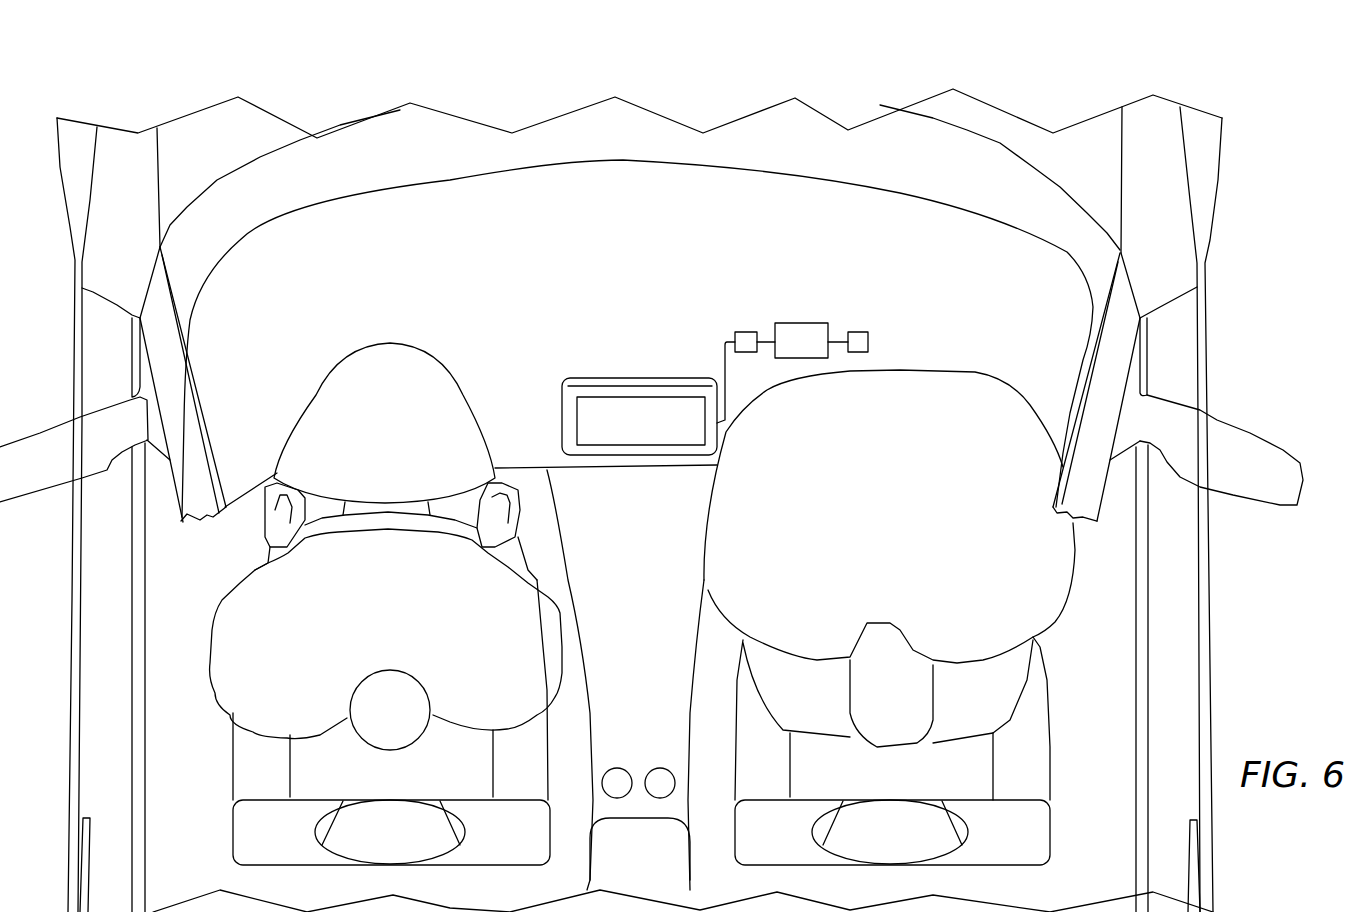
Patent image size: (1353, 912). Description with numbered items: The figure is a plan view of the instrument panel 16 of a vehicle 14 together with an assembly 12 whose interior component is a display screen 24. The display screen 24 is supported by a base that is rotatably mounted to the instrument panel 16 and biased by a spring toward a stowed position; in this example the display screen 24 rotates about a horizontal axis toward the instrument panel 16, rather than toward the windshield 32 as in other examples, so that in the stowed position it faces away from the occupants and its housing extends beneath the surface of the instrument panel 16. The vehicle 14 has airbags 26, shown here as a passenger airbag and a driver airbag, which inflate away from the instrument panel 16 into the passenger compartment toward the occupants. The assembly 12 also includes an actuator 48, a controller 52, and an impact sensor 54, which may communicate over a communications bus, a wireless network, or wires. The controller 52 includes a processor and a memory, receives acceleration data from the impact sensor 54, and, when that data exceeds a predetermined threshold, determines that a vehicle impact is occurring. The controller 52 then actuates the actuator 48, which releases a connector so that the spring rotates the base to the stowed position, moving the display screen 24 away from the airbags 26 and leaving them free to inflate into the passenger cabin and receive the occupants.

The vehicle 14 is at (333, 112).
The windshield 32 is at (267, 248).
The instrument panel 16 is at (347, 227).
The assembly 12 is at (631, 366).
The display screen 24 is at (633, 437).
The actuator 48 is at (753, 331).
The controller 52 is at (820, 323).
The impact sensor 54 is at (865, 332).
The airbag 26 is at (528, 640).